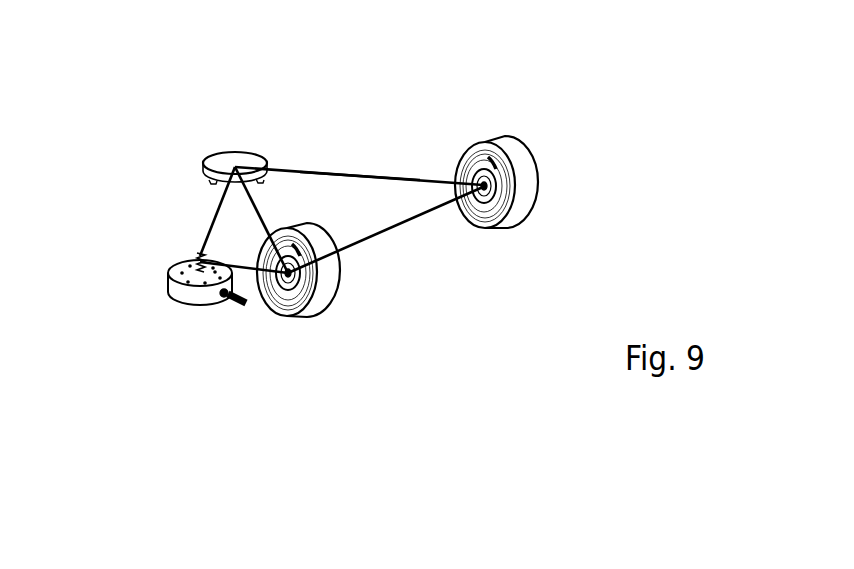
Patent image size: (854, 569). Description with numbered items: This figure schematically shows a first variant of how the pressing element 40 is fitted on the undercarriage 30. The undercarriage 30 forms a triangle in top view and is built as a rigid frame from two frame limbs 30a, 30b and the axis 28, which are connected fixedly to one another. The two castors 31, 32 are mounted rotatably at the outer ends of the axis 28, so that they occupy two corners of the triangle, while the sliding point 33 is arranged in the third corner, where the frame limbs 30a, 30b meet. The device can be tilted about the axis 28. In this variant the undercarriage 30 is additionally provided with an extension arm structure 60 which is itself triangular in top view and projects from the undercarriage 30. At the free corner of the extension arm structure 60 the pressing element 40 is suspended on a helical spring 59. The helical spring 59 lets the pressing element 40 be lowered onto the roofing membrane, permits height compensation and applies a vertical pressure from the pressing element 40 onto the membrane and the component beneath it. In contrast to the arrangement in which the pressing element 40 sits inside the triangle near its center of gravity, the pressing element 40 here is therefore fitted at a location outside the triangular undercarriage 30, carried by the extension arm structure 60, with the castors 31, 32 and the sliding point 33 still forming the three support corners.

The axis 28 is at (390, 233).
The undercarriage 30 is at (322, 162).
The frame limb 30a is at (262, 215).
The frame limb 30b is at (385, 178).
The castor 31 is at (273, 305).
The castor 32 is at (525, 172).
The sliding point 33 is at (222, 163).
The pressing element 40 is at (175, 295).
The helical spring 59 is at (195, 272).
The extension arm structure 60 is at (203, 222).